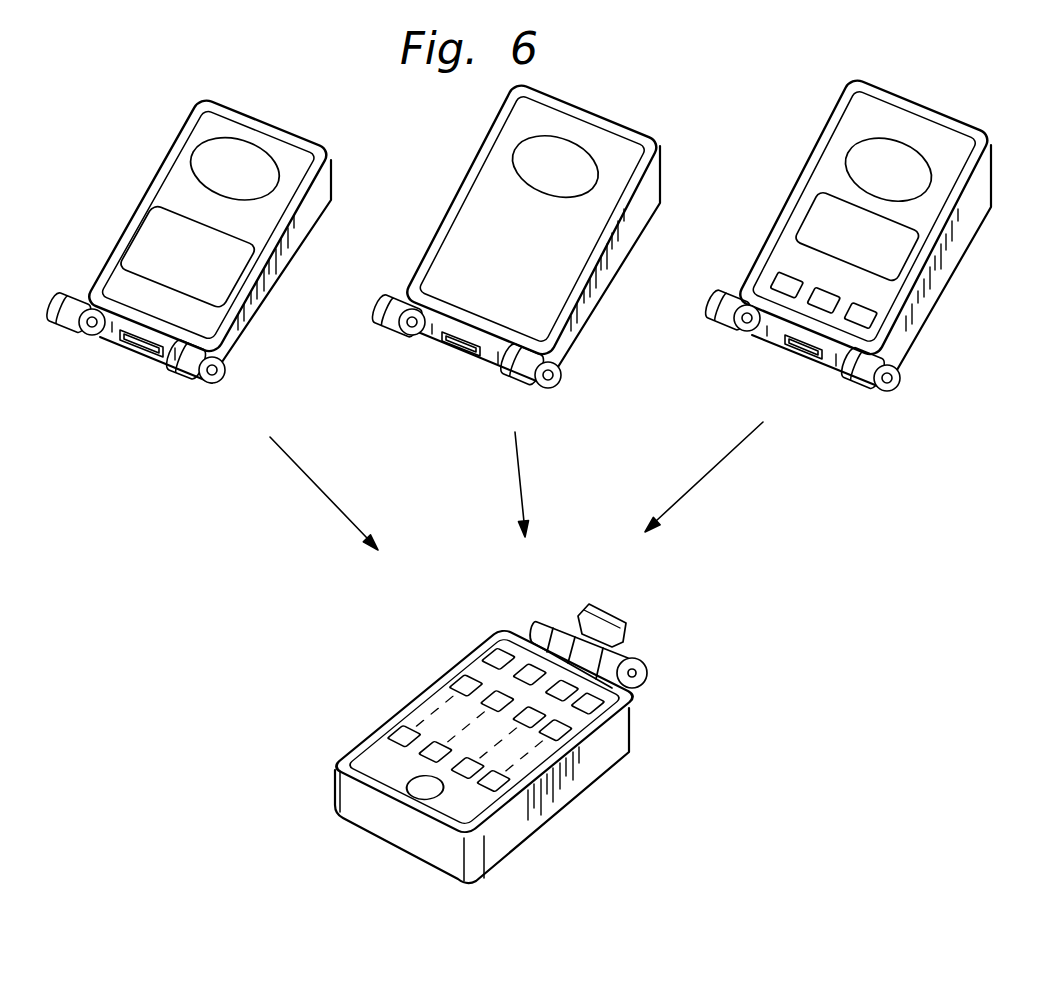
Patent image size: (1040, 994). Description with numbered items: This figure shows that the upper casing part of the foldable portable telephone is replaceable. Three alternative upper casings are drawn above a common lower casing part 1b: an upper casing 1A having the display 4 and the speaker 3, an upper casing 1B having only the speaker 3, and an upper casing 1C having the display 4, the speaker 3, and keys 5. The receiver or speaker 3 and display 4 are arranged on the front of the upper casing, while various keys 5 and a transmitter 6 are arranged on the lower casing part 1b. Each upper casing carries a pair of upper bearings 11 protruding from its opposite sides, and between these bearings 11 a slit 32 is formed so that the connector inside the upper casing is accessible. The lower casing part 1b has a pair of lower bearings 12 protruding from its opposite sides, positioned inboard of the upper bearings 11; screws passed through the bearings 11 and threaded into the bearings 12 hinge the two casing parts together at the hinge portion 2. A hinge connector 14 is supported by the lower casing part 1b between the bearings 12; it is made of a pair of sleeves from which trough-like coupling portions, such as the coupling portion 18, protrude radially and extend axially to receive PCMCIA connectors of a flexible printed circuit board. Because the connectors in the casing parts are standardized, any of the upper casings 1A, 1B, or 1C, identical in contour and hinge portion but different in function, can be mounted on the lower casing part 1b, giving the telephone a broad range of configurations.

The upper casing 1A is at (326, 148).
The upper casing 1B is at (649, 130).
The upper casing 1C is at (972, 122).
The lower casing part 1b is at (582, 778).
The hinge portion 2 is at (628, 640).
The receiver 3 is at (207, 158).
The display 4 is at (140, 246).
The keys 5 is at (870, 315).
The transmitter 6 is at (415, 782).
The upper bearings 11 is at (70, 334).
The lower bearings 12 is at (655, 670).
The hinge connector 14 is at (636, 646).
The coupling portion 18 is at (597, 606).
The slit 32 is at (142, 346).